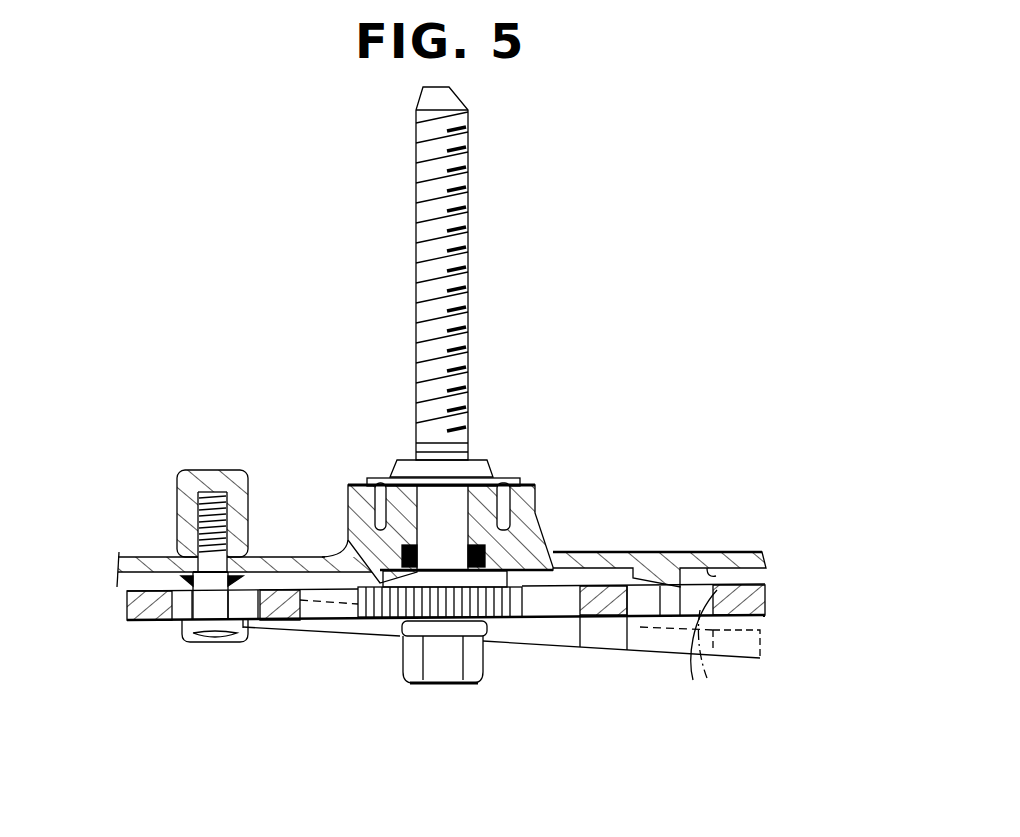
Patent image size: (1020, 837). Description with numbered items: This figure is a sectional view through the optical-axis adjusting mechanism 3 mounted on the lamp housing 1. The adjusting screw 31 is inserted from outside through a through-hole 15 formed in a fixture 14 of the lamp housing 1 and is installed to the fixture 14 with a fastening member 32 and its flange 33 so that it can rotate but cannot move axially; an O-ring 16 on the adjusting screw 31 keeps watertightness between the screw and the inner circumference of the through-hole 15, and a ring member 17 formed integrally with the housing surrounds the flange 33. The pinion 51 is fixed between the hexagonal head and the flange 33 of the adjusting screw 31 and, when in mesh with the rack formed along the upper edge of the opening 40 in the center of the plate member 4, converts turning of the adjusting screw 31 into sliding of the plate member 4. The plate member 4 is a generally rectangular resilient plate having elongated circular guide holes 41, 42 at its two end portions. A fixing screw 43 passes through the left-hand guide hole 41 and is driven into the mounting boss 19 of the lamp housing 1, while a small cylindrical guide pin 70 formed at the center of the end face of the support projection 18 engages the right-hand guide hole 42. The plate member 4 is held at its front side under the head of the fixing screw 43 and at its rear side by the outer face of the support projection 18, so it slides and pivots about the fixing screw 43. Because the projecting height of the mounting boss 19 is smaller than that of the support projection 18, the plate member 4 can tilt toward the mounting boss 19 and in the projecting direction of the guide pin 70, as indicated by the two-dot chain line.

The lamp housing 1 is at (447, 500).
The optical-axis adjusting mechanism 3 is at (488, 678).
The plate member 4 is at (762, 658).
The fixture 14 is at (456, 479).
The through-hole 15 is at (455, 520).
The O-ring 16 is at (560, 510).
The ring member 17 is at (570, 525).
The support projection 18 is at (746, 553).
The mounting boss 19 is at (177, 520).
The adjusting screw 31 is at (413, 682).
The flange 32 is at (372, 480).
The flange 33 is at (388, 560).
The opening 40 is at (450, 658).
The left-hand guide hole 41 is at (183, 622).
The right-hand guide hole 42 is at (712, 592).
The fixing screw 43 is at (213, 643).
The pinion 51 is at (368, 622).
The guide pin 70 is at (668, 615).